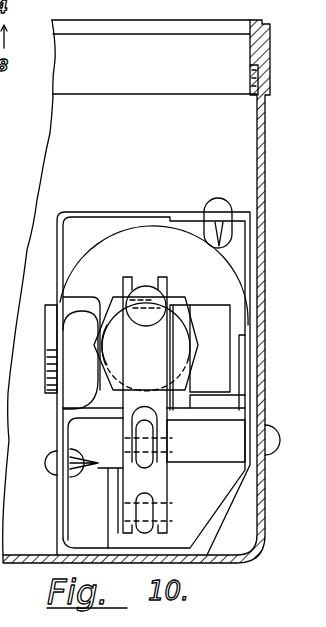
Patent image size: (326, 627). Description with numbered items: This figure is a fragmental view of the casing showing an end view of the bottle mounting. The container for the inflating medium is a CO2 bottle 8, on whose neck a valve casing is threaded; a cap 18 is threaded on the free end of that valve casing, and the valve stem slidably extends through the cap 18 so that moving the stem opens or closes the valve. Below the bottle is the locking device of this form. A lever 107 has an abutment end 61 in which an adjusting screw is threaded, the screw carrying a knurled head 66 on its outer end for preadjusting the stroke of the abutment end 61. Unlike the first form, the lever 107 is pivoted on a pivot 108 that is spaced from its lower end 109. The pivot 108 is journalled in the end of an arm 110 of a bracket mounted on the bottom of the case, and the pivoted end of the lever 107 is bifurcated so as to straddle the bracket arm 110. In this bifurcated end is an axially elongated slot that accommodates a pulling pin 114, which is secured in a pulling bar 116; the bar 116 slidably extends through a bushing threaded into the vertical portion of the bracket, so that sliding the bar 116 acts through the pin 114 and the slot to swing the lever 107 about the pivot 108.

The CO2 bottle 8 is at (116, 252).
The cap 18 is at (198, 350).
The abutment end 61 is at (145, 284).
The knurled head 66 is at (153, 300).
The lever 107 is at (162, 370).
The pivot 108 is at (165, 446).
The lower end 109 is at (125, 532).
The arm 110 is at (152, 432).
The pulling pin 114 is at (152, 515).
The pulling bar 116 is at (152, 501).